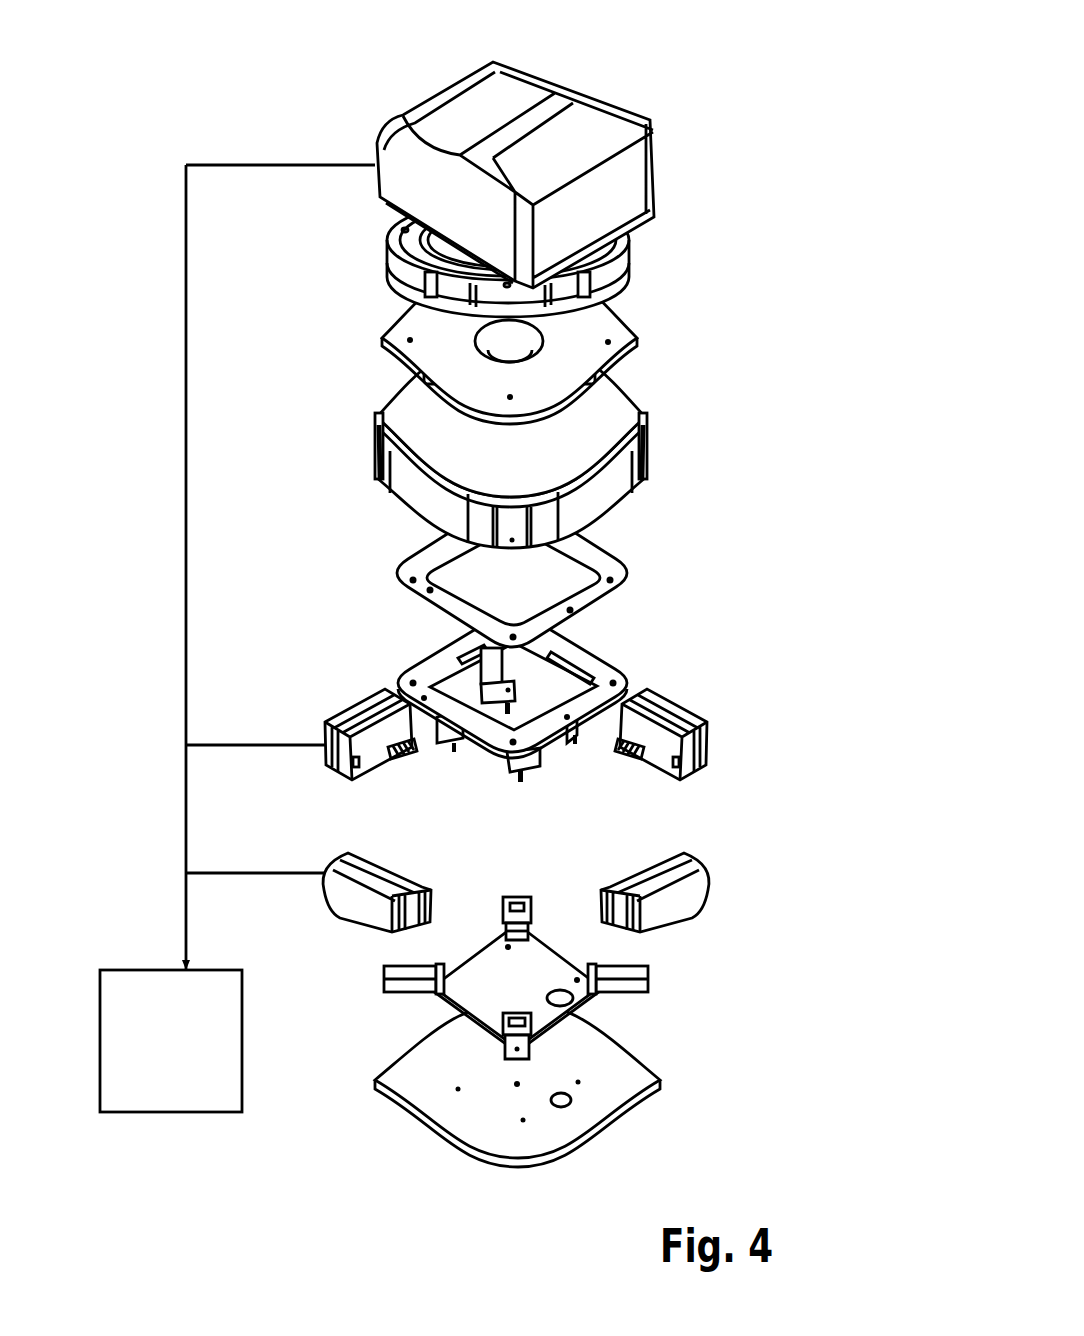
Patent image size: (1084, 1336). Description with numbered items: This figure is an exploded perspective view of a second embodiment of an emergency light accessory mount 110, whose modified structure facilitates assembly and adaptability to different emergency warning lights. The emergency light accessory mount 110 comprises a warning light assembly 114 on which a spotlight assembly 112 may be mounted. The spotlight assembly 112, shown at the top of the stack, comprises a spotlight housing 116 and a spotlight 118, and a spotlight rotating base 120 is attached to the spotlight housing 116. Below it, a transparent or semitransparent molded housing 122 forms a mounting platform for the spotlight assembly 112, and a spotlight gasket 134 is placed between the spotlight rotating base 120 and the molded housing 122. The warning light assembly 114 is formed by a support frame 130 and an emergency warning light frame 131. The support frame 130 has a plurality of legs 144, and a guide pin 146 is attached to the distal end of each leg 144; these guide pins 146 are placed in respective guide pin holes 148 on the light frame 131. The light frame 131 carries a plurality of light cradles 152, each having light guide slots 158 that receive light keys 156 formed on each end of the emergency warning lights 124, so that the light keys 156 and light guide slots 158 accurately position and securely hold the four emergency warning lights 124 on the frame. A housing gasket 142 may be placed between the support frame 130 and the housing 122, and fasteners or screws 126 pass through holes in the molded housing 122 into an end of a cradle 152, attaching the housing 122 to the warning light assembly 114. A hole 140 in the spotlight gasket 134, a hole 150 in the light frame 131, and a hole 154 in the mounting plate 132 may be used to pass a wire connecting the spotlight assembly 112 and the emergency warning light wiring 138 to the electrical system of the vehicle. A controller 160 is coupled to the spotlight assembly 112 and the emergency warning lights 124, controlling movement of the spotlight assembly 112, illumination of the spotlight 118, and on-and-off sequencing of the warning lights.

The emergency light accessory mount 110 is at (500, 583).
The spotlight assembly 112 is at (712, 258).
The warning light assembly 114 is at (752, 802).
The spotlight housing 116 is at (540, 80).
The spotlight 118 is at (645, 182).
The spotlight rotating base 120 is at (392, 258).
The molded housing 122 is at (645, 407).
The emergency warning lights 124 is at (335, 722).
The fasteners or screws 126 is at (516, 872).
The support frame 130 is at (566, 716).
The emergency warning light frame 131 is at (478, 988).
The mounting plate 132 is at (577, 1084).
The spotlight gasket 134 is at (577, 342).
The emergency warning light wiring 138 is at (404, 758).
The hole 140 is at (540, 331).
The housing gasket 142 is at (620, 566).
The legs 144 is at (507, 672).
The guide pin 146 is at (517, 777).
The guide pin holes 148 is at (456, 986).
The hole 150 is at (558, 990).
The light cradles 152 is at (650, 1005).
The hole 154 is at (572, 1100).
The light keys 156 is at (593, 922).
The light guide slots 158 is at (537, 1018).
The controller 160 is at (203, 1112).